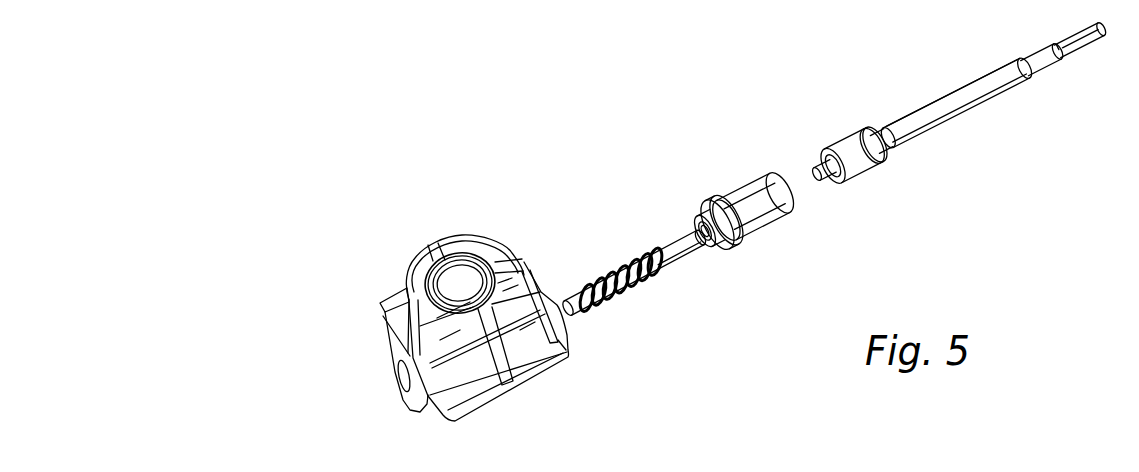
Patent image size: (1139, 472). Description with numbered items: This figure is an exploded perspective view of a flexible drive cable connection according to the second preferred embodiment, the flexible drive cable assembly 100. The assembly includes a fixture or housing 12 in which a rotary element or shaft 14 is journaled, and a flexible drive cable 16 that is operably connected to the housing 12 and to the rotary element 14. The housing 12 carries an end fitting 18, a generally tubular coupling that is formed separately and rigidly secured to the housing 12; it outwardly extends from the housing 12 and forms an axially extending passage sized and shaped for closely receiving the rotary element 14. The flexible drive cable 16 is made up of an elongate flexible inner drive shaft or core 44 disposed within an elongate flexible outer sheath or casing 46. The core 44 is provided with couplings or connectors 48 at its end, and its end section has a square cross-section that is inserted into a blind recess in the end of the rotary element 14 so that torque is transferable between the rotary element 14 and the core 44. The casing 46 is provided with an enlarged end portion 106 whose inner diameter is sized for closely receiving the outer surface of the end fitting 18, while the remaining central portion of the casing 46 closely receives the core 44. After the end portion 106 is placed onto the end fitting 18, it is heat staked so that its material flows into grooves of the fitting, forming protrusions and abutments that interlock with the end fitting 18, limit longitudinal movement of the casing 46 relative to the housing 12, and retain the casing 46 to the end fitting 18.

The flexible drive cable assembly 100 is at (643, 135).
The housing 12 is at (517, 388).
The rotary element 14 is at (680, 263).
The end fitting 18 is at (737, 190).
The flexible drive cable 16 is at (920, 107).
The casing 46 is at (977, 77).
The core 44 is at (1043, 67).
The connectors 48 is at (1090, 47).
The enlarged end portion 106 is at (872, 177).